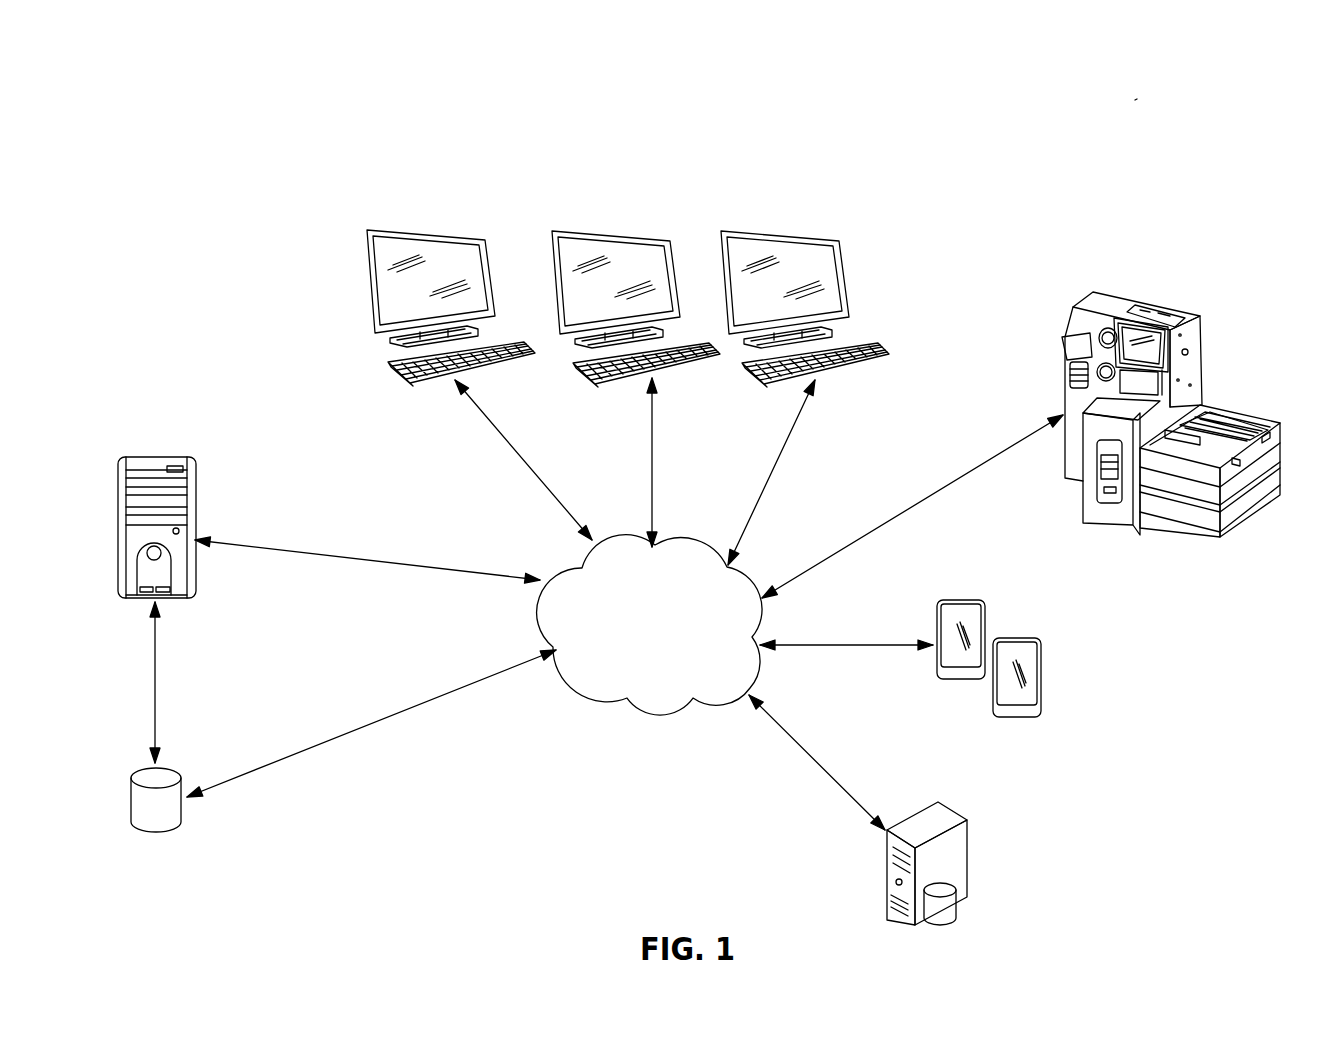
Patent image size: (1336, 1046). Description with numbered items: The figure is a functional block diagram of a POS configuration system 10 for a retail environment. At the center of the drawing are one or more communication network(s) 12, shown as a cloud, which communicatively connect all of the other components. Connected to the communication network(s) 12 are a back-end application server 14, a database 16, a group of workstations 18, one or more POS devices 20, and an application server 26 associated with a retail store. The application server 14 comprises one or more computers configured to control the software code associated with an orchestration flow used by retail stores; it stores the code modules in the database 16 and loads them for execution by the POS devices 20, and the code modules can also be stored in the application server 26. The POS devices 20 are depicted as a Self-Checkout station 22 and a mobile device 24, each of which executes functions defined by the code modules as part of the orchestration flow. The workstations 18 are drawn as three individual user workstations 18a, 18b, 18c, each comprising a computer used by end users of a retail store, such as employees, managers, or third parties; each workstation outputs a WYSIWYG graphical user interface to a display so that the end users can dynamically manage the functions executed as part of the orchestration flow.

The POS configuration system 10 is at (1139, 98).
The communication network(s) 12 is at (664, 673).
The back-end application server 14 is at (185, 457).
The database 16 is at (177, 772).
The workstations 18 is at (371, 168).
The user workstation 18a is at (448, 236).
The user workstation 18b is at (633, 237).
The user workstation 18c is at (832, 240).
The POS devices 20 is at (1204, 243).
The Self-Checkout (SCO) station 22 is at (1195, 312).
The mobile device 24 is at (1037, 640).
The application server associated with a retail store 26 is at (966, 815).